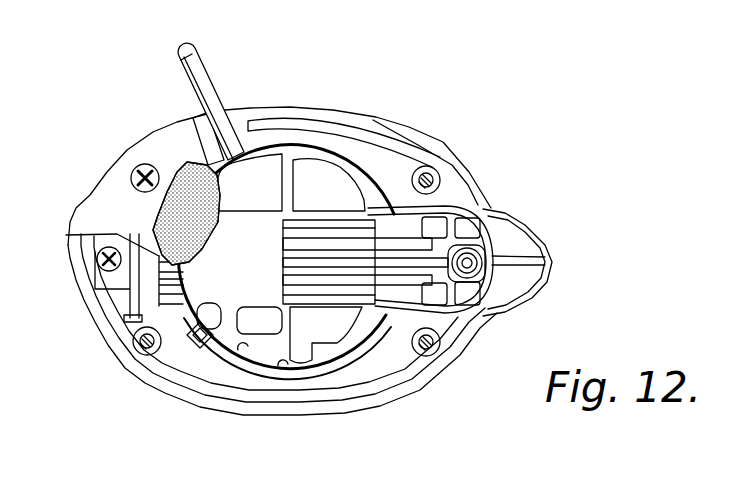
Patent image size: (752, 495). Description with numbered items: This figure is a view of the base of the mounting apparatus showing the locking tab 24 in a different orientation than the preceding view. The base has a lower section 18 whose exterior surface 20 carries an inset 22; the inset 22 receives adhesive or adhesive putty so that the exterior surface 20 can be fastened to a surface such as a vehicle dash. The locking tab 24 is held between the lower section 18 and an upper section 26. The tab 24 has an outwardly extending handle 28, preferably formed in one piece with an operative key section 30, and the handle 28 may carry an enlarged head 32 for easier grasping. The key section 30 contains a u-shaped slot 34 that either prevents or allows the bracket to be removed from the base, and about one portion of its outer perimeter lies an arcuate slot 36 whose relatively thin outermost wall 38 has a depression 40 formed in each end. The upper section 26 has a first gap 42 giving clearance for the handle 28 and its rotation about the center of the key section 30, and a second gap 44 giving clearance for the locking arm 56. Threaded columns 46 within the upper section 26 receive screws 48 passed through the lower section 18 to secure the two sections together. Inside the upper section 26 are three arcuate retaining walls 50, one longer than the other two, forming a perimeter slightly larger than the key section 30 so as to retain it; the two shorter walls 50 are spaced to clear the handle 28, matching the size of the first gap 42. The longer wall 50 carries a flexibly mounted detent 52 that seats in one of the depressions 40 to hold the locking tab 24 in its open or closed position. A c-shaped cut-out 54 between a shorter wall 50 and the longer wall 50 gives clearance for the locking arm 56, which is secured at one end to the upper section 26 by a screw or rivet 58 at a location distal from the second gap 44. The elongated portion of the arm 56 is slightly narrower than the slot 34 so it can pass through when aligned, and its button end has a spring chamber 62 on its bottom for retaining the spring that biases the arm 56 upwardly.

The lower section 18 is at (118, 170).
The exterior surface 20 is at (74, 221).
The inset 22 is at (158, 211).
The locking tab 24 is at (227, 73).
The upper section 26 is at (450, 158).
The handle 28 is at (237, 122).
The key section 30 is at (256, 284).
The enlarged head 32 is at (184, 57).
The u-shaped slot 34 is at (314, 297).
The arcuate slot 36 is at (249, 346).
The outermost wall 38 is at (258, 358).
The depression 40 is at (284, 368).
The first gap 42 is at (368, 125).
The second gap 44 is at (496, 210).
The threaded columns 46 is at (427, 167).
The screw 48 is at (140, 165).
The arcuate retaining walls 50 is at (215, 172).
The detent 52 is at (194, 340).
The c-shaped cut-out 54 is at (470, 274).
The locking arm 56 is at (557, 233).
The attaching mechanism 58 is at (104, 267).
The spring chamber 62 is at (488, 310).